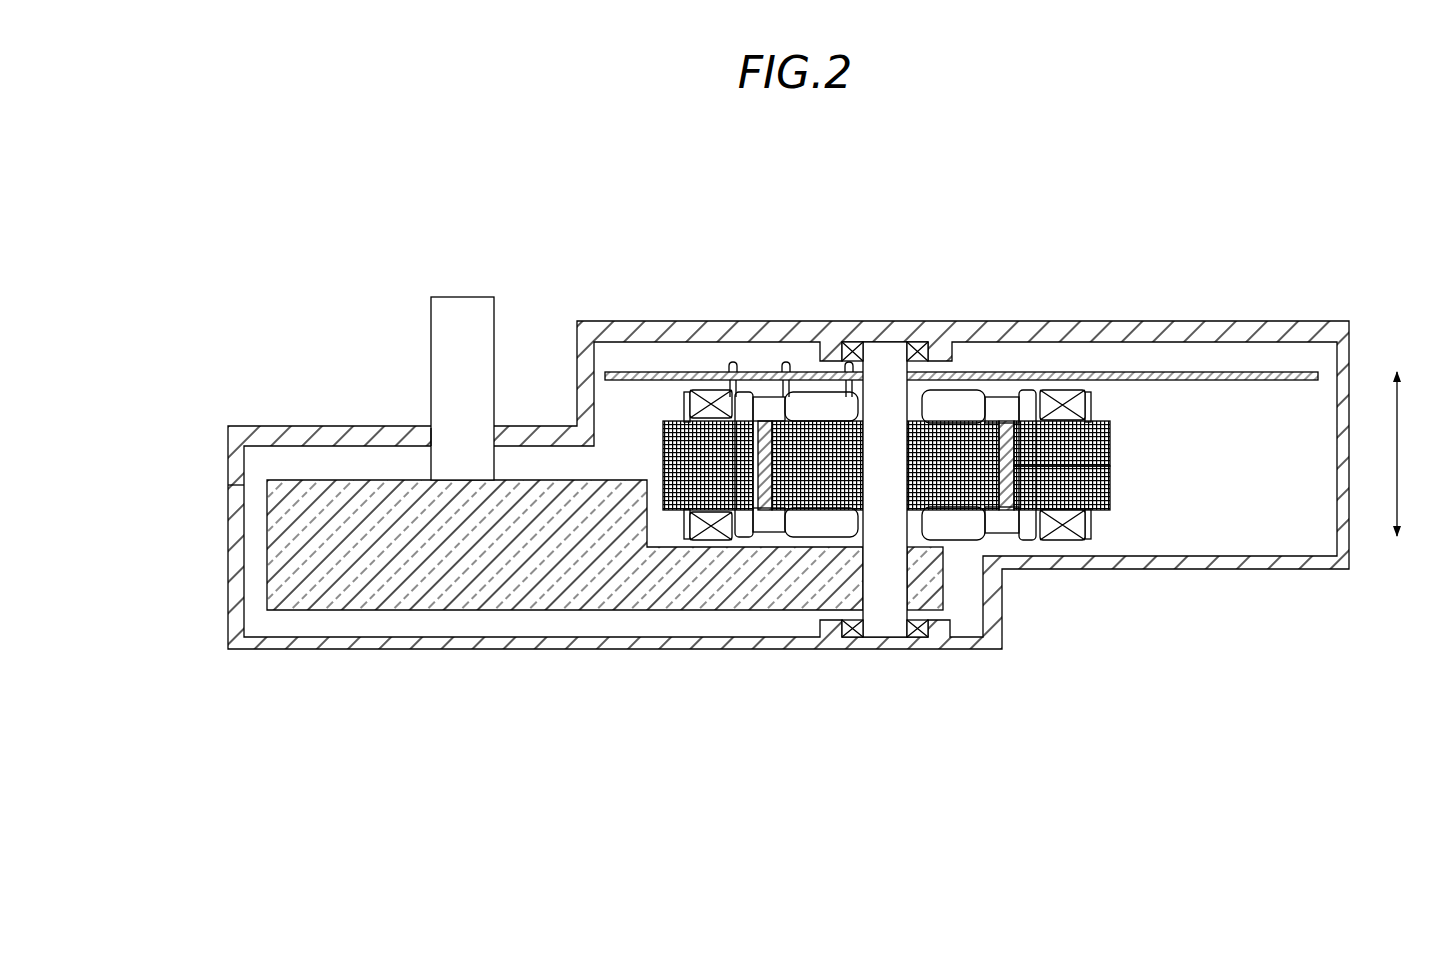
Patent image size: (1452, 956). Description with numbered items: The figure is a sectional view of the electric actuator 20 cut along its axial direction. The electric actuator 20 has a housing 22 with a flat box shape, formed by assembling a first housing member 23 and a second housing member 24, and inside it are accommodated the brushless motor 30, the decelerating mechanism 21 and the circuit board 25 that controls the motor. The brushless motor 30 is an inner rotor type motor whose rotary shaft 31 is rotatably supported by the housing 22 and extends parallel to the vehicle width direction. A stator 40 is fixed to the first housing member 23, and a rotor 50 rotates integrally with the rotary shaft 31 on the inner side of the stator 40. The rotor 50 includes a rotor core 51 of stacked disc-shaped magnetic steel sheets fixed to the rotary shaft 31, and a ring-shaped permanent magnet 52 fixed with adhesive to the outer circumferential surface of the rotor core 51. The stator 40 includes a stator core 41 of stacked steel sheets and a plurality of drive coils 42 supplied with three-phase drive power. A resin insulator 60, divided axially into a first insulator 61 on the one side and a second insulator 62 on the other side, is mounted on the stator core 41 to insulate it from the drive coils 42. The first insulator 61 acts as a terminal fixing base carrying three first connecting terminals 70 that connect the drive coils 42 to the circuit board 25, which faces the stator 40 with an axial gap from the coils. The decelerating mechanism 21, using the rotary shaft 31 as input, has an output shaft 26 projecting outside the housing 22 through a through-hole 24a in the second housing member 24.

The electric actuator 20 is at (275, 262).
The decelerating mechanism 21 is at (445, 612).
The housing 22 is at (732, 485).
The first housing member 23 is at (166, 455).
The second housing member 24 is at (230, 455).
The through-hole 24a is at (434, 438).
The circuit board 25 is at (1283, 382).
The output shaft 26 is at (468, 308).
The brushless motor 30 is at (937, 480).
The rotary shaft 31 is at (887, 352).
The stator 40 is at (909, 462).
The stator core 41 is at (663, 447).
The drive coils 42 is at (1089, 405).
The rotor 50 is at (892, 541).
The rotor core 51 is at (827, 508).
The permanent magnet 52 is at (1004, 509).
The insulator 60 is at (1119, 465).
The first insulator 61 is at (1108, 423).
The second insulator 62 is at (1094, 488).
The first connecting terminals 70 is at (849, 361).